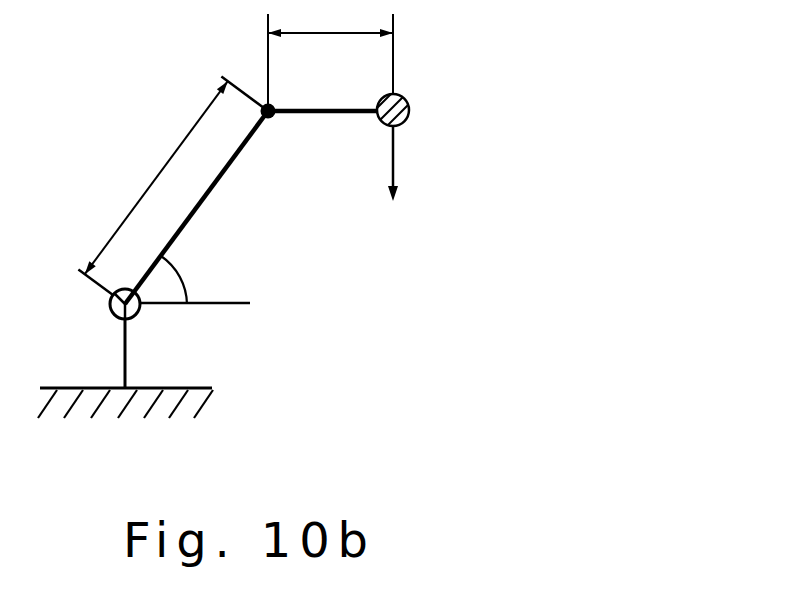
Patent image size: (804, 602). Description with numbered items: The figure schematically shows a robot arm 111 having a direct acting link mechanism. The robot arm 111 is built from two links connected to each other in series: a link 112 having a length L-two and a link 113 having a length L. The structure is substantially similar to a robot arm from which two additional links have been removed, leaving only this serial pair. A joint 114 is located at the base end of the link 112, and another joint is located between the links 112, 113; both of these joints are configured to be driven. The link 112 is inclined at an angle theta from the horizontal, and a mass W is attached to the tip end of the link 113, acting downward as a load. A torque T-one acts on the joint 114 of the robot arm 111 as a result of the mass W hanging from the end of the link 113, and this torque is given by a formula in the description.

The robot arm 111 is at (281, 214).
The link 112 is at (225, 170).
The link 113 is at (337, 108).
The joint 114 is at (134, 316).